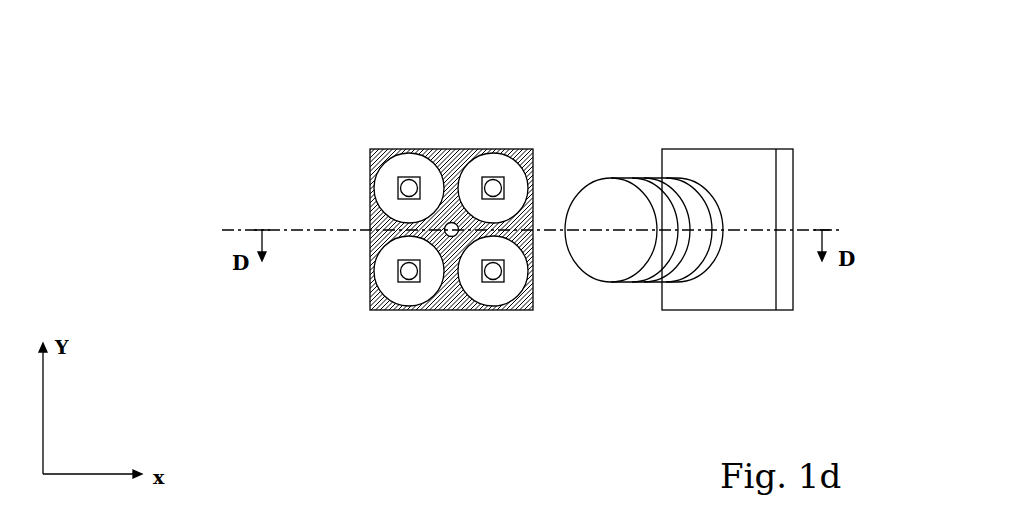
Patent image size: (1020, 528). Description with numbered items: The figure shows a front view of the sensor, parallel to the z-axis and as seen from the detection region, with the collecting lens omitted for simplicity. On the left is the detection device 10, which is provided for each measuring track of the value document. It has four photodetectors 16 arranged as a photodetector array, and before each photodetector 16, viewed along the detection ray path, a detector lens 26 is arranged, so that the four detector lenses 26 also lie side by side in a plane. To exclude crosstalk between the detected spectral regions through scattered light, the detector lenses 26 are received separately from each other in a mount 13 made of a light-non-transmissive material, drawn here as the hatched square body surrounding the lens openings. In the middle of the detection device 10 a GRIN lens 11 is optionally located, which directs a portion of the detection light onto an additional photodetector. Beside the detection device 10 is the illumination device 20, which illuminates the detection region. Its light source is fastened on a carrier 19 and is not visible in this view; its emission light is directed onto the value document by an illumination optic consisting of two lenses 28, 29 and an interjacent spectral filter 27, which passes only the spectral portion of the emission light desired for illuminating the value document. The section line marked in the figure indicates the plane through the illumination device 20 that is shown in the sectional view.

The detection device 10 is at (415, 126).
The GRIN lens 11 is at (453, 227).
The mount 13 is at (390, 310).
The photodetector 16 is at (412, 187).
The carrier 19 is at (760, 293).
The illumination device 20 is at (700, 126).
The detector lens 26 is at (380, 180).
The spectral filter 27 is at (664, 278).
The lens 28 is at (630, 279).
The lens 29 is at (701, 273).